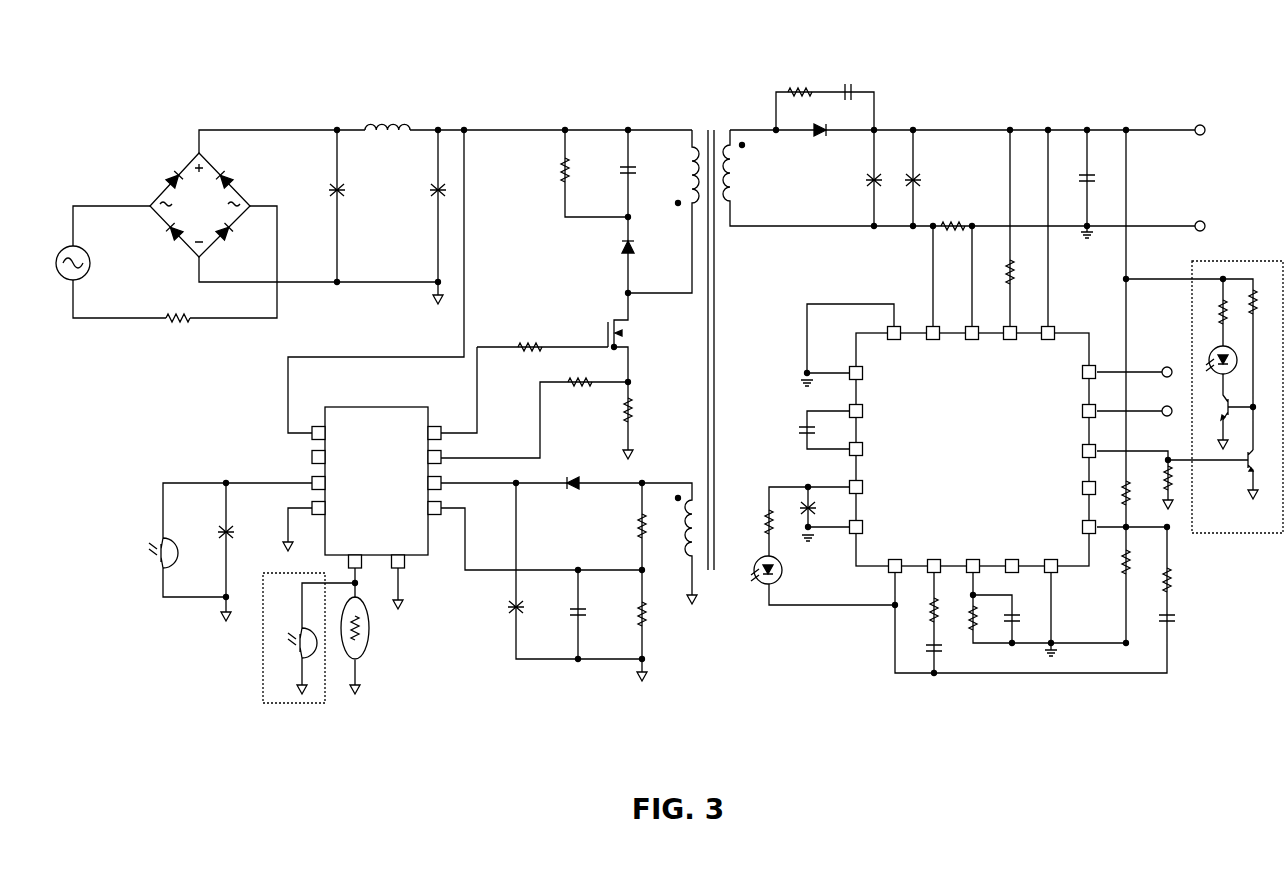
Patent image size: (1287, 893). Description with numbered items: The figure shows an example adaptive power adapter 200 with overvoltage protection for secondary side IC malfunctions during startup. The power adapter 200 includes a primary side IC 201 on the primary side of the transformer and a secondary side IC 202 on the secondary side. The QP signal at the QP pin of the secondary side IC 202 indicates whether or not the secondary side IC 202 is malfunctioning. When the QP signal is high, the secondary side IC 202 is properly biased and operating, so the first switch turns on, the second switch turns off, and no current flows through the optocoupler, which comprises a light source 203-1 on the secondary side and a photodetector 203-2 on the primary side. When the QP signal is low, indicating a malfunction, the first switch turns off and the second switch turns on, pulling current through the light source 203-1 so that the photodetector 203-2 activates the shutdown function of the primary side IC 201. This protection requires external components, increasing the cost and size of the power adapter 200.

The power adapter 200 is at (251, 80).
The primary side IC 201 is at (393, 407).
The secondary side IC 202 is at (973, 450).
The light source 203-1 is at (1196, 353).
The photodetector 203-2 is at (268, 654).